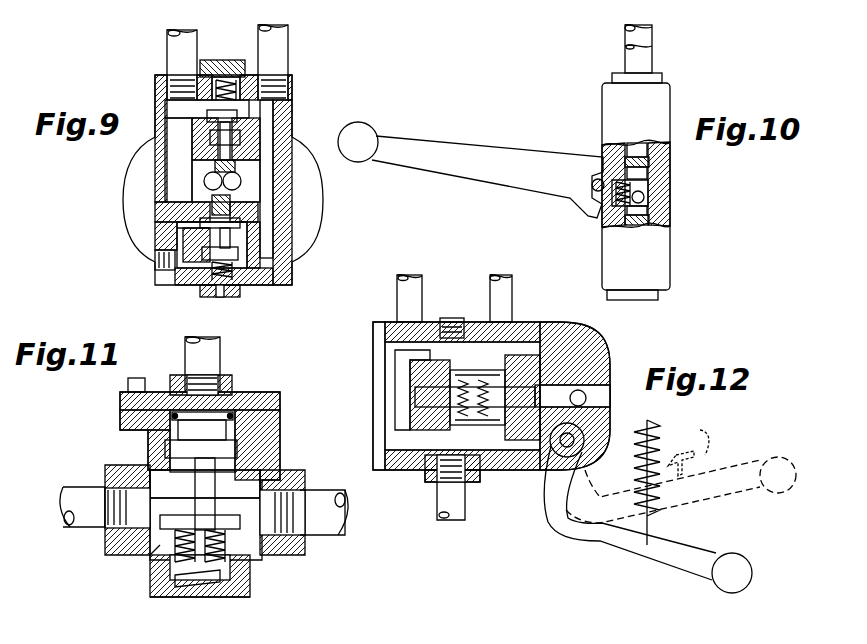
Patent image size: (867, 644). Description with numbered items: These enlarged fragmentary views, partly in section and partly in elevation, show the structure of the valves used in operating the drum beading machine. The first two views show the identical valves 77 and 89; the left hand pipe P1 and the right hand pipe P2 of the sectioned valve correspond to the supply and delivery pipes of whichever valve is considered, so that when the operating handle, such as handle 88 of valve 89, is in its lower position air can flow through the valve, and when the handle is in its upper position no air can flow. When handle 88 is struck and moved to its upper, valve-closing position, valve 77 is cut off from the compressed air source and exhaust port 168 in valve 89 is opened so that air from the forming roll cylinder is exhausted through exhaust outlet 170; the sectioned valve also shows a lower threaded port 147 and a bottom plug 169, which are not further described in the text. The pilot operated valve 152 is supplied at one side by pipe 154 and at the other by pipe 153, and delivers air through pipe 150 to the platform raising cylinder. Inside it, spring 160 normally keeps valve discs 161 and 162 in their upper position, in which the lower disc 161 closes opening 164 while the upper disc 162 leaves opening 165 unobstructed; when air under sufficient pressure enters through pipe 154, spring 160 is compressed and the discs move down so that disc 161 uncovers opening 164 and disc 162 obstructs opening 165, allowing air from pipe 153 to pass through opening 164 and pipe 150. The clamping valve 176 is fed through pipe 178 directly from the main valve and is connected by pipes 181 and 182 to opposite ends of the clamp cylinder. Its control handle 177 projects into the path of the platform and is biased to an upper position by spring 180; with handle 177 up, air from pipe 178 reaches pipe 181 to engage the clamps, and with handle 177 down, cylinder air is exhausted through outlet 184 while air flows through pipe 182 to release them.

In FIG. 9, the left hand pipe P1 is at (170, 48).
In FIG. 10, the left hand pipe P1 is at (648, 38).
In FIG. 9, the right hand pipe P2 is at (285, 45).
In FIG. 10, the right hand pipe P2 is at (648, 54).
In FIG. 9, the valve 77 is at (256, 172).
In FIG. 10, the valve 77 is at (679, 186).
In FIG. 9, the valve 89 is at (292, 106).
In FIG. 10, the valve 89 is at (660, 250).
In FIG. 9, the exhaust port 168 is at (183, 224).
In FIG. 9, the threaded port 147 is at (101, 265).
In FIG. 9, the exhaust outlet 170 is at (155, 266).
In FIG. 9, the bottom plug 169 is at (224, 292).
In FIG. 10, the handle 88 is at (440, 146).
In FIG. 11, the pilot operated valve 152 is at (280, 412).
In FIG. 11, the pipe 154 is at (216, 356).
In FIG. 11, the upper valve disc 162 is at (236, 448).
In FIG. 11, the opening 164 is at (228, 500).
In FIG. 11, the opening 165 is at (193, 478).
In FIG. 11, the pipe 150 is at (93, 466).
In FIG. 11, the pipe 153 is at (320, 528).
In FIG. 11, the lower valve disc 161 is at (156, 550).
In FIG. 11, the spring 160 is at (215, 598).
In FIG. 12, the valve 176 is at (553, 325).
In FIG. 12, the pipe 181 is at (400, 296).
In FIG. 12, the pipe 182 is at (503, 296).
In FIG. 12, the outlet 184 is at (452, 316).
In FIG. 12, the pipe 178 is at (458, 512).
In FIG. 12, the control handle 177 is at (730, 505).
In FIG. 12, the spring 180 is at (660, 424).